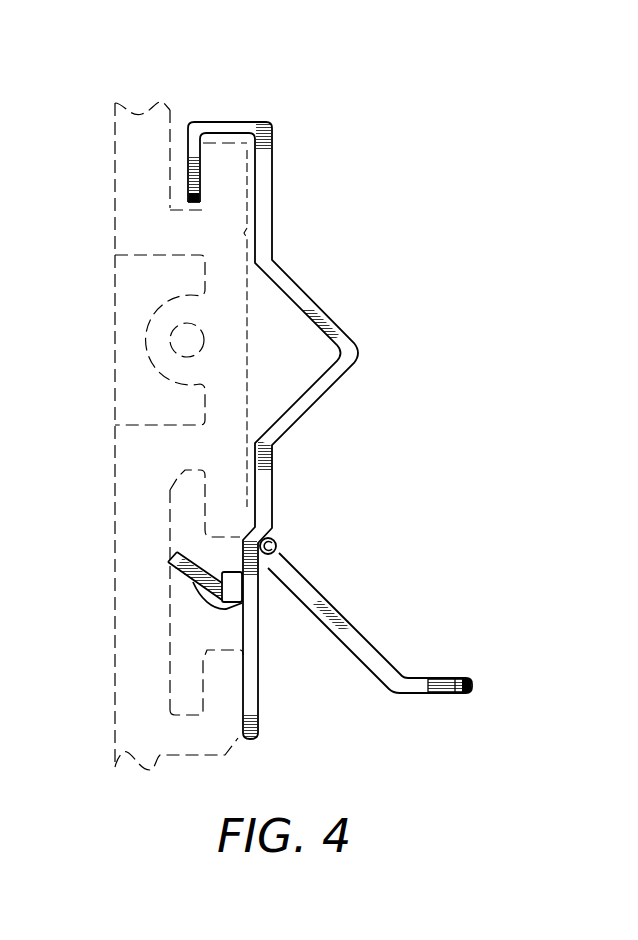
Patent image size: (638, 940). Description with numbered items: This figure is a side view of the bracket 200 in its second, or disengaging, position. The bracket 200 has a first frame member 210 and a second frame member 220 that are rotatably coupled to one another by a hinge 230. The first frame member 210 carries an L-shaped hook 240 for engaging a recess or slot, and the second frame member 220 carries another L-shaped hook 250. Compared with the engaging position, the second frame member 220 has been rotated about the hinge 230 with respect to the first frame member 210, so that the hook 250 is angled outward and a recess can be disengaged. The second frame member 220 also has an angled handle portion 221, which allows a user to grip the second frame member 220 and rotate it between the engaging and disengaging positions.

The bracket 200 is at (322, 74).
The first frame member 210 is at (290, 181).
The second frame member 220 is at (372, 620).
The angled handle portion 221 is at (432, 694).
The hinge 230 is at (283, 546).
The L-shaped hook 240 is at (193, 148).
The L-shaped hook 250 is at (195, 583).